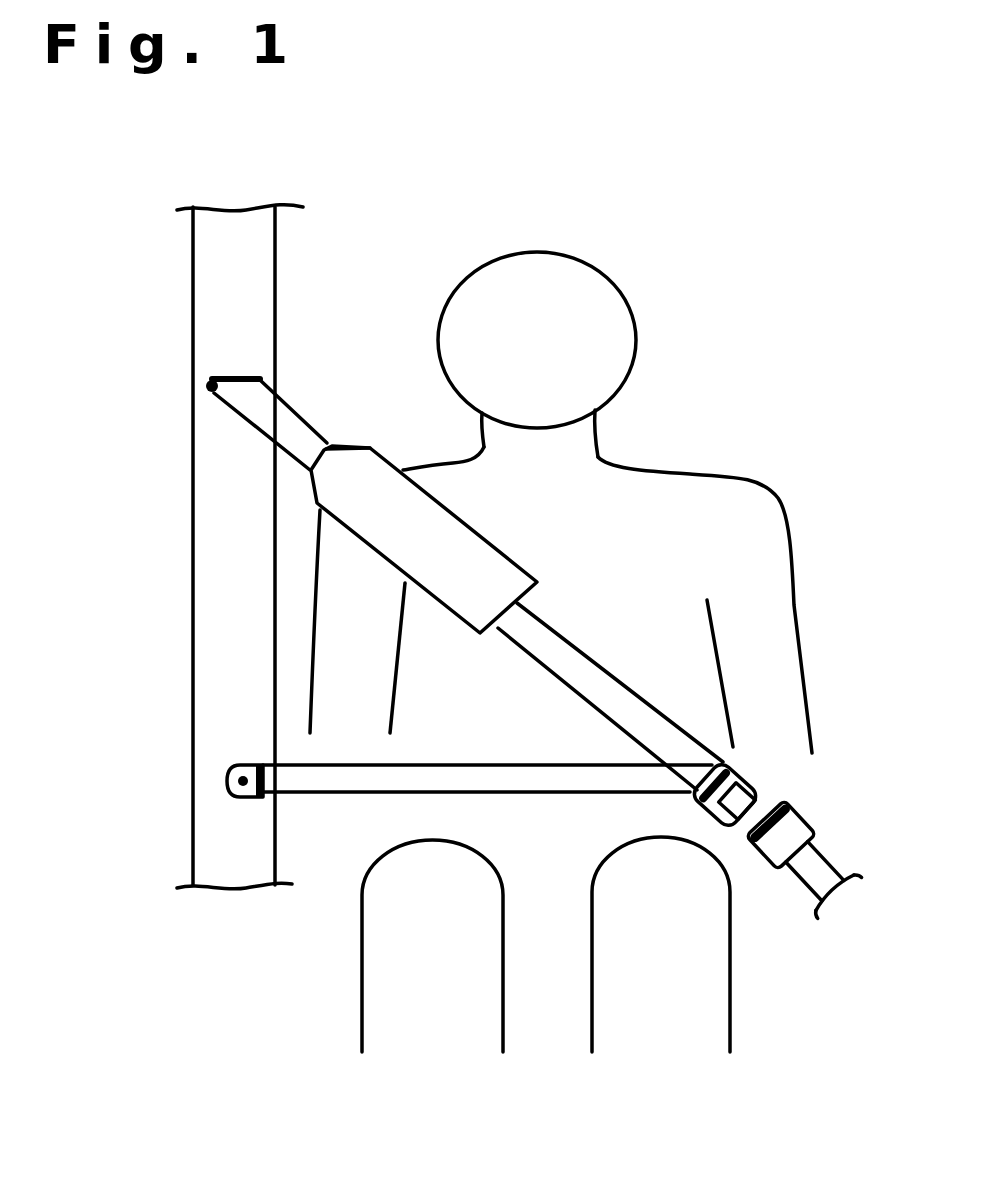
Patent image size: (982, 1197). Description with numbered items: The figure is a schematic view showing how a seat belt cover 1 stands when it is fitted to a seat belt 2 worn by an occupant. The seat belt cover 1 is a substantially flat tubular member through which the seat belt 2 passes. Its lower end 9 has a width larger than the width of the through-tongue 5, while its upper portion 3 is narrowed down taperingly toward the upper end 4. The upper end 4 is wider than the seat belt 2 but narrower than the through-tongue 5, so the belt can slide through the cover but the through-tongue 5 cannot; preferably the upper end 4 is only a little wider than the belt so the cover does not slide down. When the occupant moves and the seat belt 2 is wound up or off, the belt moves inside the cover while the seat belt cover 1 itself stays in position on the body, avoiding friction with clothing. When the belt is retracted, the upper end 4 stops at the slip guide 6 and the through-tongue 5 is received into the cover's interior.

The seat belt cover 1 is at (400, 535).
The seat belt 2 is at (263, 417).
The upper portion 3 is at (337, 480).
The upper end 4 is at (330, 446).
The through-tongue 5 is at (733, 762).
The slip guide 6 is at (211, 380).
The lower end 9 is at (527, 617).